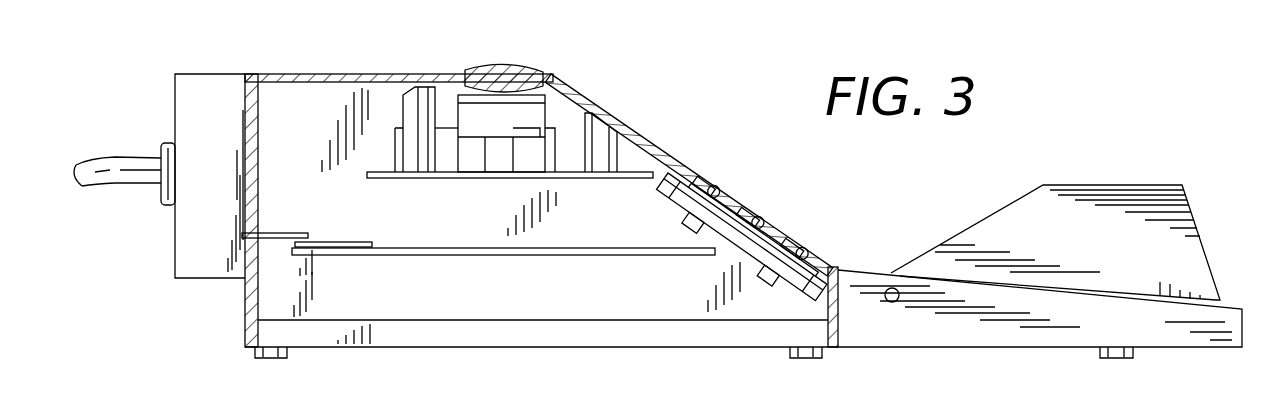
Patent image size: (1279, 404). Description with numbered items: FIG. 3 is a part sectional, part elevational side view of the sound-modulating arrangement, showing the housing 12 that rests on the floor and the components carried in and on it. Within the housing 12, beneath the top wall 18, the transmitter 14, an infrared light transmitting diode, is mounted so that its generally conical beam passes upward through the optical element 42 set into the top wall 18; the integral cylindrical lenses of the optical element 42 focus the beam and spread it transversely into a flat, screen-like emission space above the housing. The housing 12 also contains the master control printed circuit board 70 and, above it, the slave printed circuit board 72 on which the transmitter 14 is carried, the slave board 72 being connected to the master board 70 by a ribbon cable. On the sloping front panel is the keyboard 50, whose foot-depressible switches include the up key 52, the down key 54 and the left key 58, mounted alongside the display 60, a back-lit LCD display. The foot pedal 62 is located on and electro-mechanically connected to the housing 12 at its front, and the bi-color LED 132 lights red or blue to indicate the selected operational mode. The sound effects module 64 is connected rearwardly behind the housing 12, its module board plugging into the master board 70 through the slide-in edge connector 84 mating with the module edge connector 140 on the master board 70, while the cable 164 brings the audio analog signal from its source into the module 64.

The housing 12 is at (874, 238).
The transmitter 14 is at (468, 113).
The top wall 18 is at (330, 73).
The optical element 42 is at (505, 65).
The keyboard 50 is at (727, 172).
The up key 52 is at (725, 175).
The down key 54 is at (805, 238).
The left key 58 is at (754, 192).
The display 60 is at (752, 234).
The foot pedal 62 is at (1155, 187).
The sound effects module 64 is at (215, 77).
The master control printed circuit board 70 is at (388, 246).
The slave printed circuit board 72 is at (588, 181).
The slide-in edge connector 84 is at (295, 222).
The bi-color LED 132 is at (898, 303).
The module edge connector 140 is at (338, 243).
The cable 164 is at (107, 188).